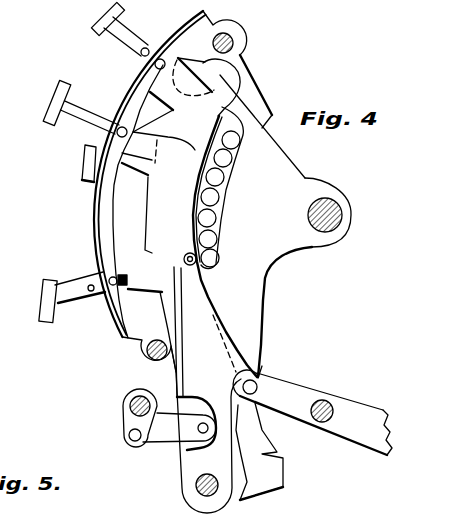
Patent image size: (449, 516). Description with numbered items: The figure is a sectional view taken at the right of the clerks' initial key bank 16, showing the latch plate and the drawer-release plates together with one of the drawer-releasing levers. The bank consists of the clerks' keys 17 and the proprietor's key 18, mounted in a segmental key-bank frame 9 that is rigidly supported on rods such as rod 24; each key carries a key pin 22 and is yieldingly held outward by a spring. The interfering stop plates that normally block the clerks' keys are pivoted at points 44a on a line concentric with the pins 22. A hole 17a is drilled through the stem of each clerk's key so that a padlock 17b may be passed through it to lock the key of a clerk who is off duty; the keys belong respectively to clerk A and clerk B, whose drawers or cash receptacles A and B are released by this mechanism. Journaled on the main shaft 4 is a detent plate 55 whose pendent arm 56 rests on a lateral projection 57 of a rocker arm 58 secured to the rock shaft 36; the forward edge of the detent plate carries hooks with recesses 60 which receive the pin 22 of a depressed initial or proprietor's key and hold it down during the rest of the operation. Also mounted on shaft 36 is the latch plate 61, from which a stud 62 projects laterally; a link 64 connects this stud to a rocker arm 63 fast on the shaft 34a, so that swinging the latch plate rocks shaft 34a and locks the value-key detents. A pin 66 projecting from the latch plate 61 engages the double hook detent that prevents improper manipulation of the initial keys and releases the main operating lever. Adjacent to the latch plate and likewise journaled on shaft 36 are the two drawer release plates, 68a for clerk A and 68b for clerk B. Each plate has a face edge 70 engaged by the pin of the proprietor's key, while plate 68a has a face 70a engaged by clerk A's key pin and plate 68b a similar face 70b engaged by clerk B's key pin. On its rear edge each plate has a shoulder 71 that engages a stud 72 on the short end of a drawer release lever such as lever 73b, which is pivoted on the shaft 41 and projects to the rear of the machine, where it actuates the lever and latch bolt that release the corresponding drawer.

The main shaft 4 is at (345, 213).
The key-bank frame 9 is at (248, 86).
The clerks' initial key bank 16 is at (126, 169).
The clerks' keys 17 is at (97, 33).
The hole 17a is at (140, 55).
The padlock 17b is at (86, 162).
The proprietor's key 18 is at (44, 300).
The key pins 22 is at (164, 62).
The rod 24 is at (146, 351).
The rod or shaft 34a is at (133, 401).
The shaft 36 is at (196, 487).
The shaft 41 is at (327, 423).
The pivot points 44a is at (216, 178).
The detent plate 55 is at (238, 188).
The pendent arm 56 is at (254, 310).
The lateral projection 57 is at (272, 470).
The rocker arm 58 is at (257, 497).
The recesses 60 is at (118, 222).
The latch plate 61 is at (195, 198).
The stud 62 is at (191, 444).
The rocker arm 63 is at (128, 424).
The link 64 is at (158, 432).
The pin 66 is at (184, 263).
The drawer release plate 68a is at (243, 118).
The drawer release plate 68b is at (258, 365).
The face edge 70 is at (130, 288).
The face 70a is at (117, 198).
The face 70b is at (158, 150).
The shoulder 71 is at (247, 377).
The stud 72 is at (258, 390).
The drawer release lever 73b is at (352, 405).
The drawer or cash receptacle A is at (100, 18).
The drawer or cash receptacle B is at (56, 95).